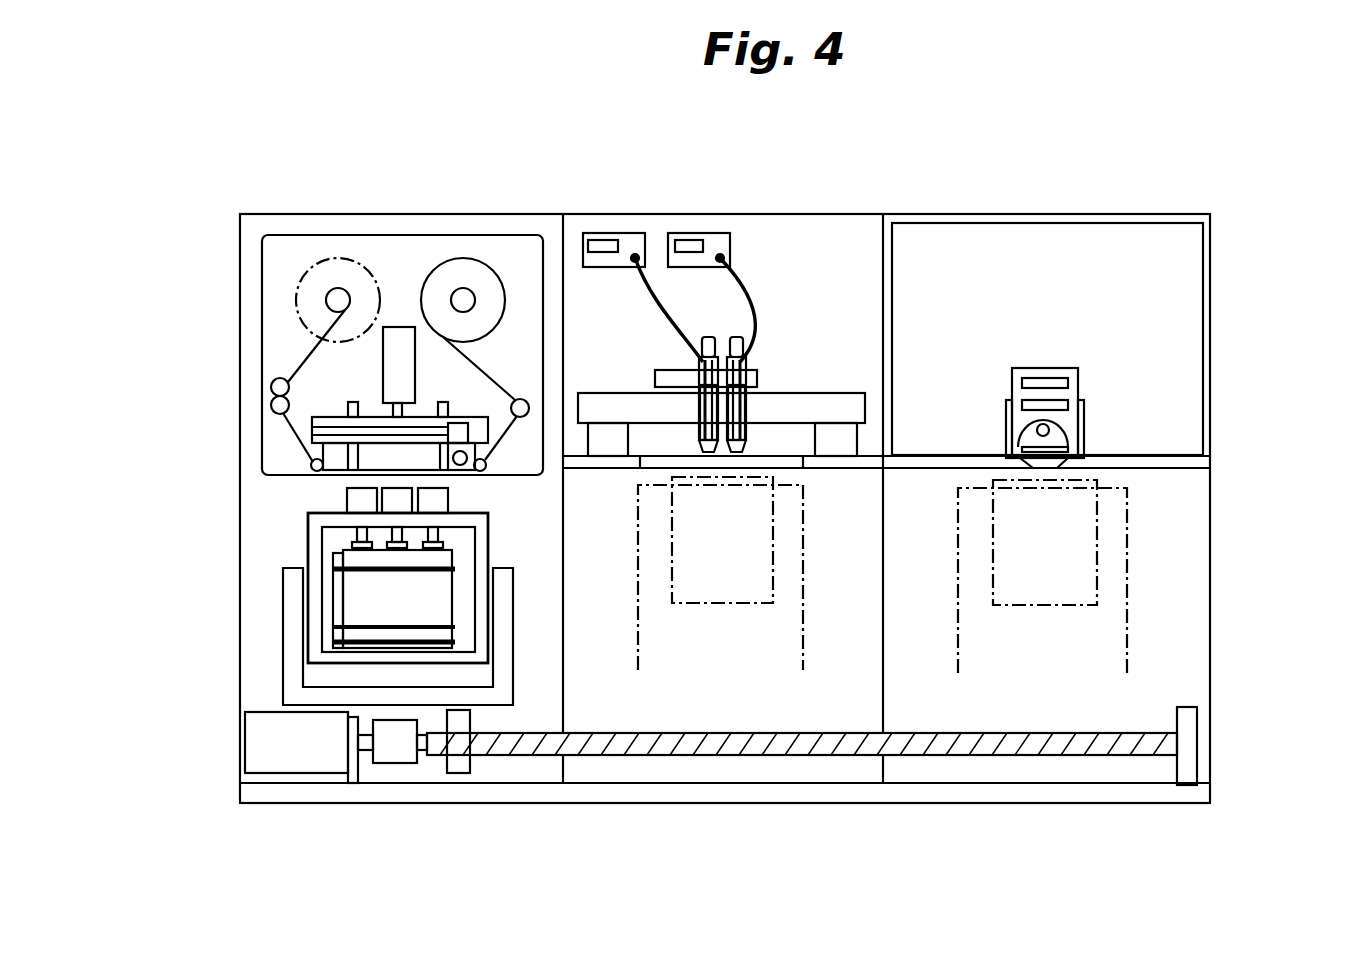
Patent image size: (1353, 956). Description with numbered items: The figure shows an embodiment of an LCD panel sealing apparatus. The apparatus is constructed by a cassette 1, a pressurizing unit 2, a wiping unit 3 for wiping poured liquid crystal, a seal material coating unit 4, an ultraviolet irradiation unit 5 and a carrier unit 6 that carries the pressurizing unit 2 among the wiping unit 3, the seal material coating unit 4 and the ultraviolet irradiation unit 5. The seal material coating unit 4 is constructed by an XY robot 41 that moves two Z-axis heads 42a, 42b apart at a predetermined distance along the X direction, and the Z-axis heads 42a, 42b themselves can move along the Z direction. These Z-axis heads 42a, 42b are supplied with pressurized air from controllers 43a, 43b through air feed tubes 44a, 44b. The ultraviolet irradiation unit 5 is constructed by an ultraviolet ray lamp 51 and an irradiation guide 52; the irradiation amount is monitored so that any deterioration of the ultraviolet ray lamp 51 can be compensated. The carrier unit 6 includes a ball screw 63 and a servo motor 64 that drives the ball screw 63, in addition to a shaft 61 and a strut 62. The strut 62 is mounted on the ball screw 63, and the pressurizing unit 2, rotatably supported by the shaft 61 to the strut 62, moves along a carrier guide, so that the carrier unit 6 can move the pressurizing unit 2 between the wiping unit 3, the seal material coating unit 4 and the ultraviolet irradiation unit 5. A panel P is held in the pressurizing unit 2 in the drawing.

The cassette 1 is at (342, 645).
The pressurizing unit 2 is at (287, 522).
The wiping unit 3 is at (313, 237).
The seal material coating unit 4 is at (827, 215).
The XY robot 41 is at (853, 393).
The Z-axis head 42a is at (700, 400).
The Z-axis head 42b is at (746, 400).
The controller 43a is at (603, 233).
The controller 43b is at (678, 233).
The air feed tube 44a is at (702, 337).
The air feed tube 44b is at (738, 337).
The ultraviolet irradiation unit 5 is at (1103, 217).
The ultraviolet ray lamp 51 is at (1078, 387).
The irradiation guide 52 is at (1083, 463).
The carrier unit 6 is at (465, 803).
The shaft 61 is at (303, 568).
The strut 62 is at (287, 640).
The ball screw 63 is at (940, 757).
The servo motor 64 is at (295, 777).
The workpiece P is at (452, 567).